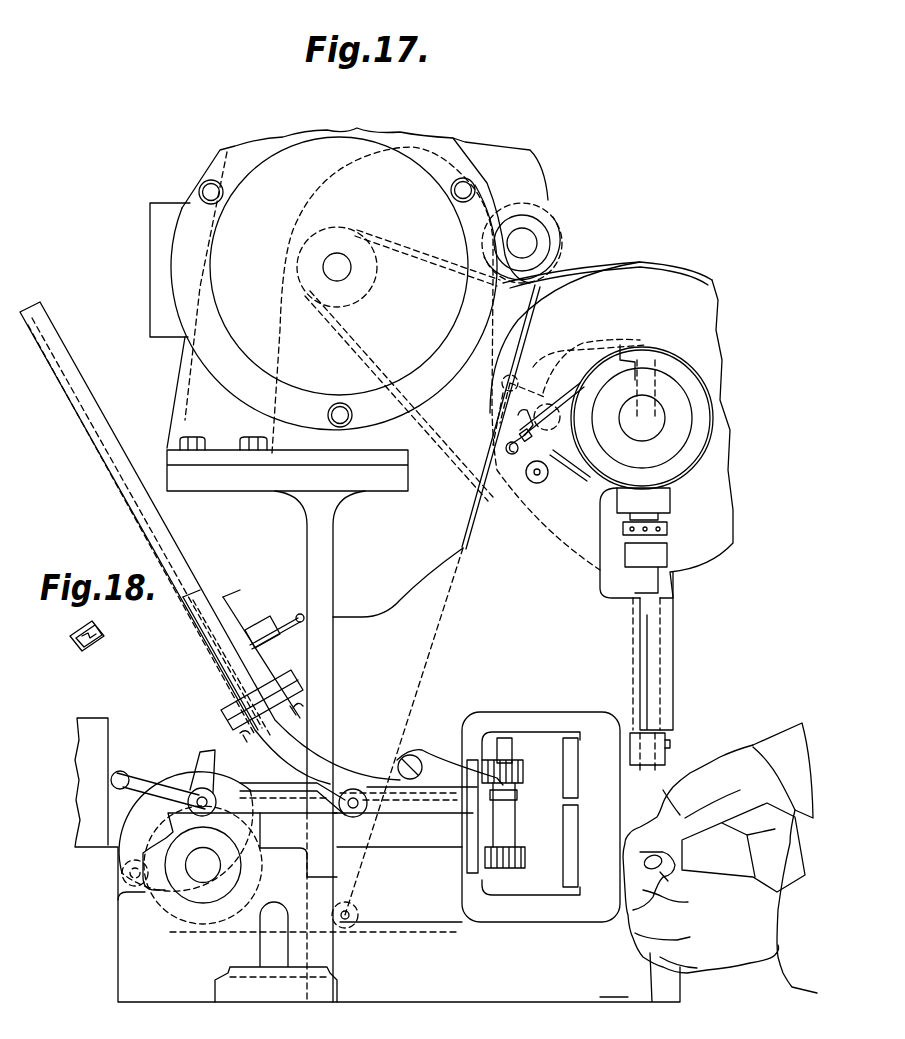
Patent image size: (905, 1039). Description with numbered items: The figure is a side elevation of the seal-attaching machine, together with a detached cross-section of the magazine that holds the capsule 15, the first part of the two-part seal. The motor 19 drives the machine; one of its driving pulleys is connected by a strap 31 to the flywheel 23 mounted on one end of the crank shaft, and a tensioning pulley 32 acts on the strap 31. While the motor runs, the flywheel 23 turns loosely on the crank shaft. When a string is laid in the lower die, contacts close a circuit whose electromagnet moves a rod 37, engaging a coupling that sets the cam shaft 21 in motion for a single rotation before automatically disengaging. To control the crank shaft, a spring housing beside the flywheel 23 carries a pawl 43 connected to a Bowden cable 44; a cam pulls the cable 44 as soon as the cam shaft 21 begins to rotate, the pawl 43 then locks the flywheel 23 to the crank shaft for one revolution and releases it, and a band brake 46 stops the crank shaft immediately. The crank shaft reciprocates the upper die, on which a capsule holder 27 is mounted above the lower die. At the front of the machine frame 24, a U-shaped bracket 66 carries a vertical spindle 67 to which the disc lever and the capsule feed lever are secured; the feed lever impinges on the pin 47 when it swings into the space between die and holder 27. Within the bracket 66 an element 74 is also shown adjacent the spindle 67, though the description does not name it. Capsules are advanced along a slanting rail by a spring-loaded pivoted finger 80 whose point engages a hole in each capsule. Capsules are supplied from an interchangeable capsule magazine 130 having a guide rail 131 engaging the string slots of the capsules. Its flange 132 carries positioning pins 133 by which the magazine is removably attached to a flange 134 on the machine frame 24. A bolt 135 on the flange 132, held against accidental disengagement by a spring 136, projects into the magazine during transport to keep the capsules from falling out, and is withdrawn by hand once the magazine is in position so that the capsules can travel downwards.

In FIG. 17, the capsule 15 is at (638, 770).
In FIG. 17, the motor 19 is at (212, 350).
In FIG. 17, the cam shaft 21 is at (190, 848).
In FIG. 17, the flywheel 23 is at (700, 328).
In FIG. 17, the machine frame 24 is at (404, 494).
In FIG. 17, the capsule holder 27 is at (632, 738).
In FIG. 17, the strap 31 is at (560, 283).
In FIG. 17, the tensioning pulley 32 is at (553, 236).
In FIG. 17, the rod 37 is at (142, 788).
In FIG. 17, the pawl 43 is at (640, 380).
In FIG. 17, the Bowden cable 44 is at (490, 498).
In FIG. 17, the band brake 46 is at (710, 392).
In FIG. 17, the pin 47 is at (563, 778).
In FIG. 17, the U-shaped bracket 66 is at (583, 897).
In FIG. 17, the vertical spindle 67 is at (512, 748).
In FIG. 17, the rack 74 is at (578, 845).
In FIG. 17, the pivoted finger 80 is at (455, 770).
In FIG. 17, the capsule magazine 130 is at (115, 470).
In FIG. 18, the capsule magazine 130 is at (98, 632).
In FIG. 18, the guide rail 131 is at (90, 650).
In FIG. 17, the flange 132 is at (212, 637).
In FIG. 17, the positioning pins 133 is at (296, 712).
In FIG. 17, the flange 134 is at (232, 730).
In FIG. 17, the bolt 135 is at (292, 614).
In FIG. 17, the spring 136 is at (250, 630).